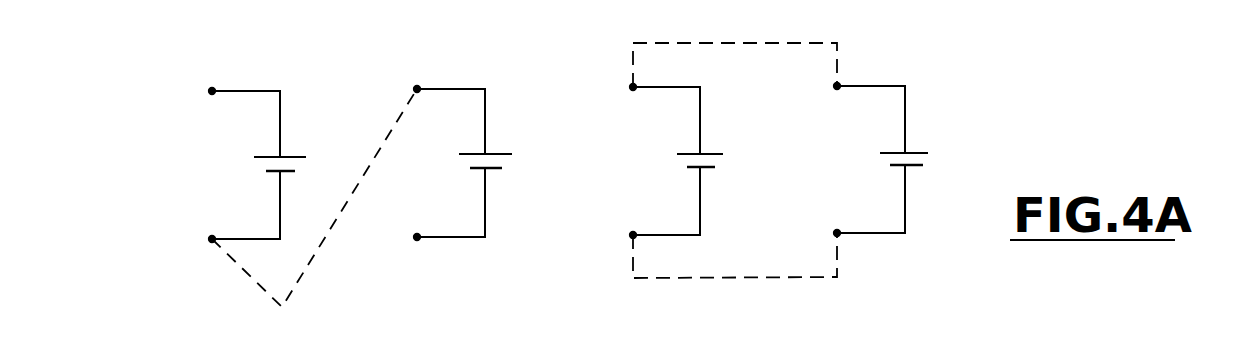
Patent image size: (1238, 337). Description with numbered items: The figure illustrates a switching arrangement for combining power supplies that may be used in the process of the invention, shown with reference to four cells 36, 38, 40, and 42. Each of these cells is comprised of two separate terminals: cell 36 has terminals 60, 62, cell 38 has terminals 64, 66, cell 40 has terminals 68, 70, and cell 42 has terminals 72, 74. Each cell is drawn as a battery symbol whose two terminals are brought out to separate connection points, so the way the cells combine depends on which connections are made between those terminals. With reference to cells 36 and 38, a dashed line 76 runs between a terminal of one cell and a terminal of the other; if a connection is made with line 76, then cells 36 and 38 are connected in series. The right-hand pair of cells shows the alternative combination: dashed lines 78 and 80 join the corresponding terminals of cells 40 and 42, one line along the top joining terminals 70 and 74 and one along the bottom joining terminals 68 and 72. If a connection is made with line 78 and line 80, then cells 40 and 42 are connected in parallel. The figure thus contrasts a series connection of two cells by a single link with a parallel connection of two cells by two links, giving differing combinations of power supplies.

The cell 36 is at (293, 157).
The cell 38 is at (493, 154).
The cell 40 is at (712, 154).
The cell 42 is at (920, 155).
The terminal 60 is at (196, 236).
The terminal 62 is at (195, 90).
The terminal 64 is at (397, 235).
The terminal 66 is at (398, 87).
The terminal 68 is at (616, 237).
The terminal 70 is at (614, 90).
The terminal 72 is at (818, 233).
The terminal 74 is at (817, 89).
The line 76 is at (313, 277).
The line 78 is at (725, 280).
The line 80 is at (752, 45).